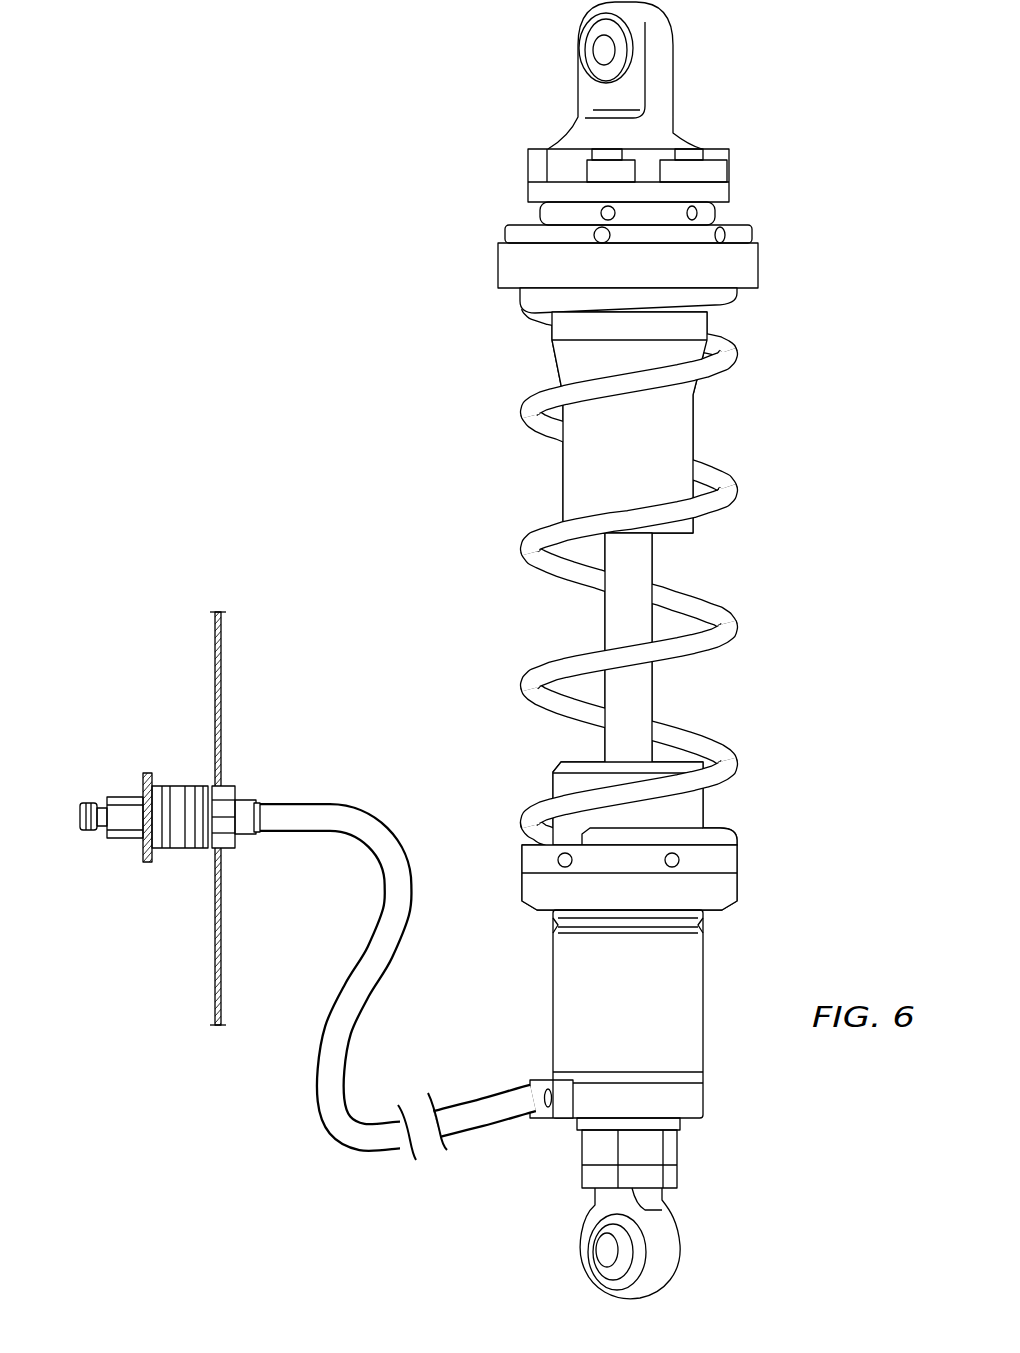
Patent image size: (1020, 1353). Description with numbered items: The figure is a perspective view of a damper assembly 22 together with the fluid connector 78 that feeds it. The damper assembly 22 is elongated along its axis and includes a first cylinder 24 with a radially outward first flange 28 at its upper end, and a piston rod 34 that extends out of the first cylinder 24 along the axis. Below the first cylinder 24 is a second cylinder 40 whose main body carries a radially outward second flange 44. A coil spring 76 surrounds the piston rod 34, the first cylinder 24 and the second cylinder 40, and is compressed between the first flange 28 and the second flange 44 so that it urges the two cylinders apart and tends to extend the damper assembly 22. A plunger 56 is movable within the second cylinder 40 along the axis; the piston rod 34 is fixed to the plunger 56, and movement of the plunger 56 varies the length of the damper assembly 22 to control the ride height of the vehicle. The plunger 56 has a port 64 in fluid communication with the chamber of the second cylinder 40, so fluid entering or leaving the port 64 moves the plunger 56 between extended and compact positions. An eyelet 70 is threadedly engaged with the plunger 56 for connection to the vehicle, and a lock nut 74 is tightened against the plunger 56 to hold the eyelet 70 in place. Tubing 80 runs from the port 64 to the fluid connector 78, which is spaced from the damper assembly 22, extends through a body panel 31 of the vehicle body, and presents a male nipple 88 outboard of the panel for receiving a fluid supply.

The damper assembly 22 is at (420, 99).
The first cylinder 24 is at (697, 420).
The first flange 28 is at (760, 256).
The body panel 31 is at (213, 668).
The piston rod 34 is at (655, 563).
The second cylinder 40 is at (707, 805).
The second flange 44 is at (738, 864).
The plunger 56 is at (683, 1127).
The port 64 is at (538, 1122).
The eyelet 70 is at (665, 1250).
The lock nut 74 is at (678, 1180).
The coil spring 76 is at (722, 620).
The fluid connector 78 is at (175, 850).
The tubing 80 is at (331, 803).
The male nipple 88 is at (90, 803).